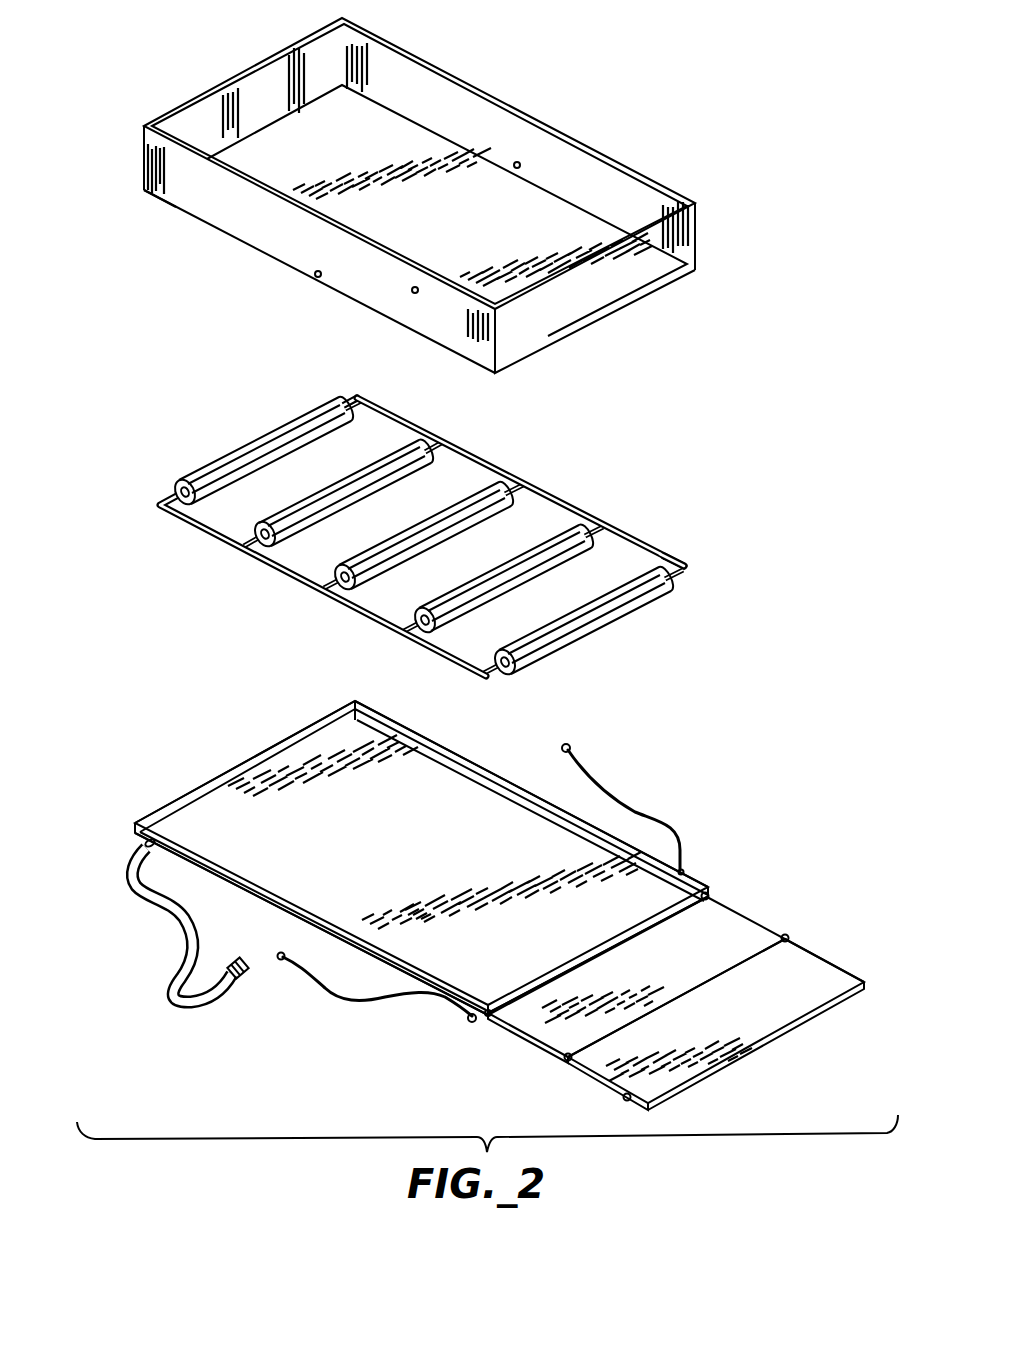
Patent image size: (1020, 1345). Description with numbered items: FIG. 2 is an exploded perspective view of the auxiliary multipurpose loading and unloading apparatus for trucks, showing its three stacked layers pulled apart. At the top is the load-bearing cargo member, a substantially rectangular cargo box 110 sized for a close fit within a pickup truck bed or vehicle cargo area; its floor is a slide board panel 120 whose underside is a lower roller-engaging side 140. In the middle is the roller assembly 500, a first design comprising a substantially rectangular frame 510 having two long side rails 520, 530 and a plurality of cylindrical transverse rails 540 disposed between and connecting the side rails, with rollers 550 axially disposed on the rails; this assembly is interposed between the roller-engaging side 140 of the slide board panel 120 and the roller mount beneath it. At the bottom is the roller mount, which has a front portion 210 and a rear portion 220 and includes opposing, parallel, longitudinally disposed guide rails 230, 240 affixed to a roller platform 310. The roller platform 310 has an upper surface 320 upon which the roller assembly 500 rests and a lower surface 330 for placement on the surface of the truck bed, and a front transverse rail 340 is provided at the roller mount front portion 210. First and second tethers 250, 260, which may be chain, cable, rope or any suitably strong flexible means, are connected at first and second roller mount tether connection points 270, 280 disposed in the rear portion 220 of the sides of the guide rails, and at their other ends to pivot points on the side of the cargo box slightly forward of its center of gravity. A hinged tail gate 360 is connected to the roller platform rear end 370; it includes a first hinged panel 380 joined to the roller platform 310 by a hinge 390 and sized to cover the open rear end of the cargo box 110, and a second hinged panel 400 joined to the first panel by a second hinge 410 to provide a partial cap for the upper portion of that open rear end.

The cargo box 110 is at (530, 137).
The slide board panel 120 is at (563, 320).
The lower roller-engaging side 140 is at (221, 256).
The front portion 210 is at (108, 841).
The rear portion 220 is at (754, 821).
The guide rail 230 is at (158, 895).
The guide rail 240 is at (440, 747).
The first tether 250 is at (323, 990).
The second tether 260 is at (632, 811).
The first roller mount tether connection point 270 is at (469, 1022).
The second roller mount tether connection point 280 is at (687, 872).
The roller platform 310 is at (310, 774).
The upper surface 320 is at (386, 837).
The lower surface 330 is at (262, 922).
The front transverse rail 340 is at (234, 763).
The hinged tail gate 360 is at (831, 928).
The roller platform rear end 370 is at (563, 965).
The first hinged panel 380 is at (730, 920).
The hinge 390 is at (620, 946).
The second hinged panel 400 is at (812, 966).
The second hinge 410 is at (688, 993).
The roller assembly 500 is at (615, 490).
The frame 510 is at (678, 570).
The side rail 520 is at (266, 571).
The side rail 530 is at (463, 453).
The cylindrical transverse rail 540 is at (160, 505).
The roller 550 is at (296, 452).